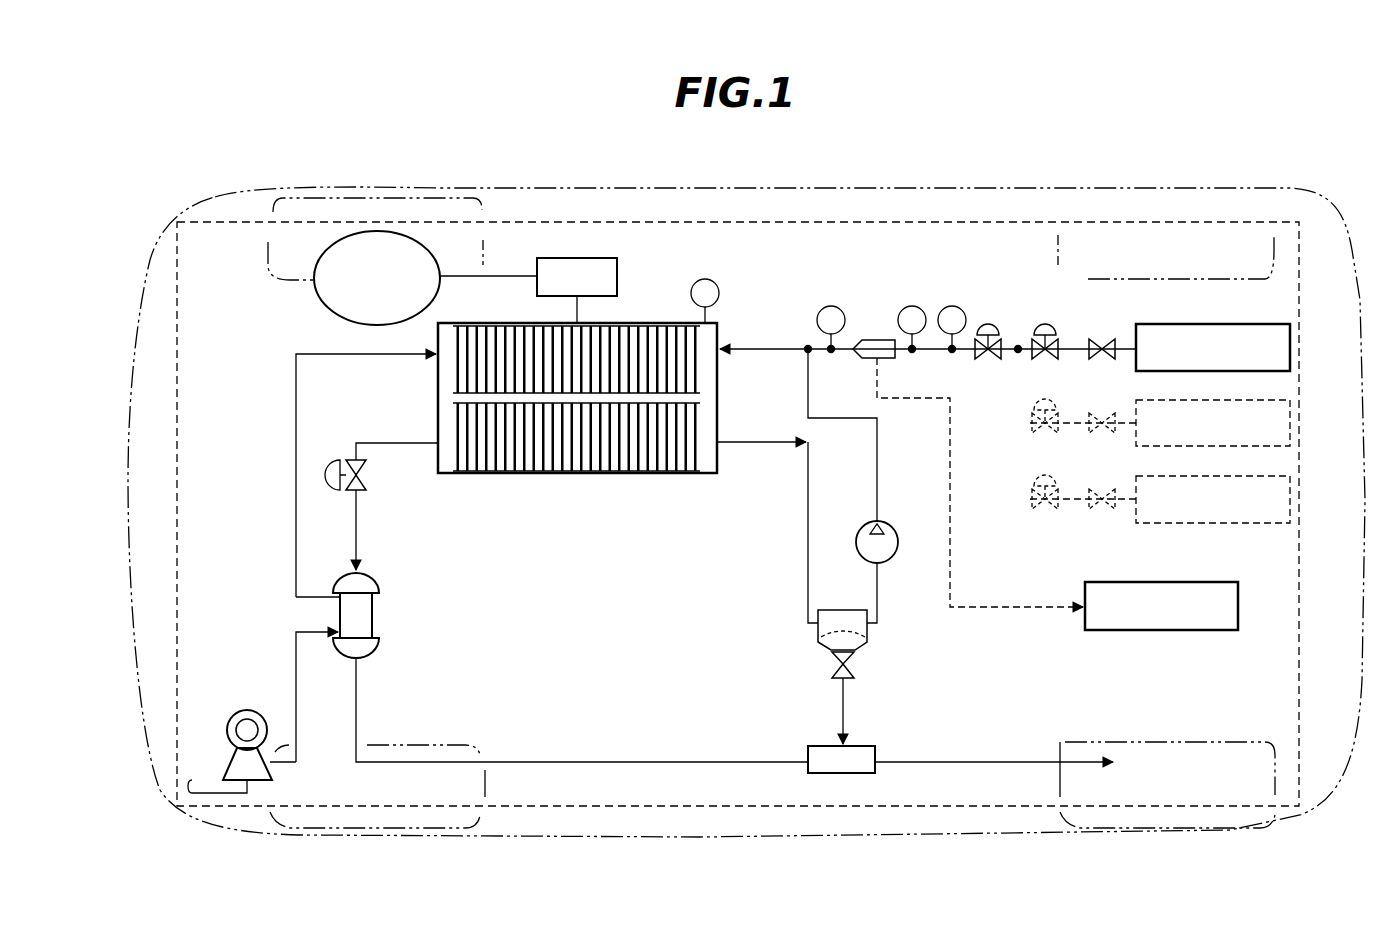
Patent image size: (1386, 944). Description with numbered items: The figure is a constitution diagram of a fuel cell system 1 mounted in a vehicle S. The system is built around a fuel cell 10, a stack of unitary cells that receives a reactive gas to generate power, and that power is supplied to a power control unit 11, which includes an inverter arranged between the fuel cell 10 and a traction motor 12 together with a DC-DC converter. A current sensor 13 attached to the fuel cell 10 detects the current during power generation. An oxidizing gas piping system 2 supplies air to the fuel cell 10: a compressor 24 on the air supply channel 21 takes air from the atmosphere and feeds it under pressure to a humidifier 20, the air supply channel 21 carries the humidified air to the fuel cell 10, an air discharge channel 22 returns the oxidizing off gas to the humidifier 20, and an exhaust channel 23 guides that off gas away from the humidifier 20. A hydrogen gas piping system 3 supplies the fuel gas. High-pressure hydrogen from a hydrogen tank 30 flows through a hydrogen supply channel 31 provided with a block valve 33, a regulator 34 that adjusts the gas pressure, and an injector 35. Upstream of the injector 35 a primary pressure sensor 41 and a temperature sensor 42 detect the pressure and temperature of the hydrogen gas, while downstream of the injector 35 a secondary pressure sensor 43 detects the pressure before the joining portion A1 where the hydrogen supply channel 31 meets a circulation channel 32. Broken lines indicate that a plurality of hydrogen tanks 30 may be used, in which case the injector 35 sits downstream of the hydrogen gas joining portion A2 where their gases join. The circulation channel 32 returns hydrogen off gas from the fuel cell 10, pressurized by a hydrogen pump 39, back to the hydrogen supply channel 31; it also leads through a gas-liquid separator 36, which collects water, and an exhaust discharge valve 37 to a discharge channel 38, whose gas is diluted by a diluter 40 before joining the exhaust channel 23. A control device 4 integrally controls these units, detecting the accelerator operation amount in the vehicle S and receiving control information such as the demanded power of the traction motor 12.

The vehicle S is at (1003, 188).
The fuel cell system 1 is at (560, 220).
The oxidizing gas piping system 2 is at (393, 571).
The hydrogen gas piping system 3 is at (798, 611).
The control device 4 is at (1160, 582).
The fuel cell 10 is at (667, 475).
The power control unit 11 is at (617, 283).
The traction motor 12 is at (322, 305).
The current sensor 13 is at (705, 279).
The humidifier 20 is at (375, 622).
The air supply channel 21 is at (296, 548).
The air discharge channel 22 is at (356, 532).
The exhaust channel 23 is at (752, 761).
The compressor 24 is at (253, 714).
The hydrogen tank 30 is at (1240, 324).
The hydrogen supply channel 31 is at (760, 349).
The circulation channel 32 is at (808, 576).
The block valve 33 is at (1100, 340).
The regulator 34 is at (989, 324).
The injector 35 is at (871, 340).
The gas-liquid separator 36 is at (830, 610).
The exhaust discharge valve 37 is at (834, 670).
The discharge channel 38 is at (844, 705).
The hydrogen pump 39 is at (895, 530).
The diluter 40 is at (878, 752).
The primary pressure sensor 41 is at (916, 306).
The temperature sensor 42 is at (956, 306).
The secondary pressure sensor 43 is at (836, 306).
The joining portion A1 is at (803, 355).
The hydrogen gas joining portion A2 is at (1017, 355).